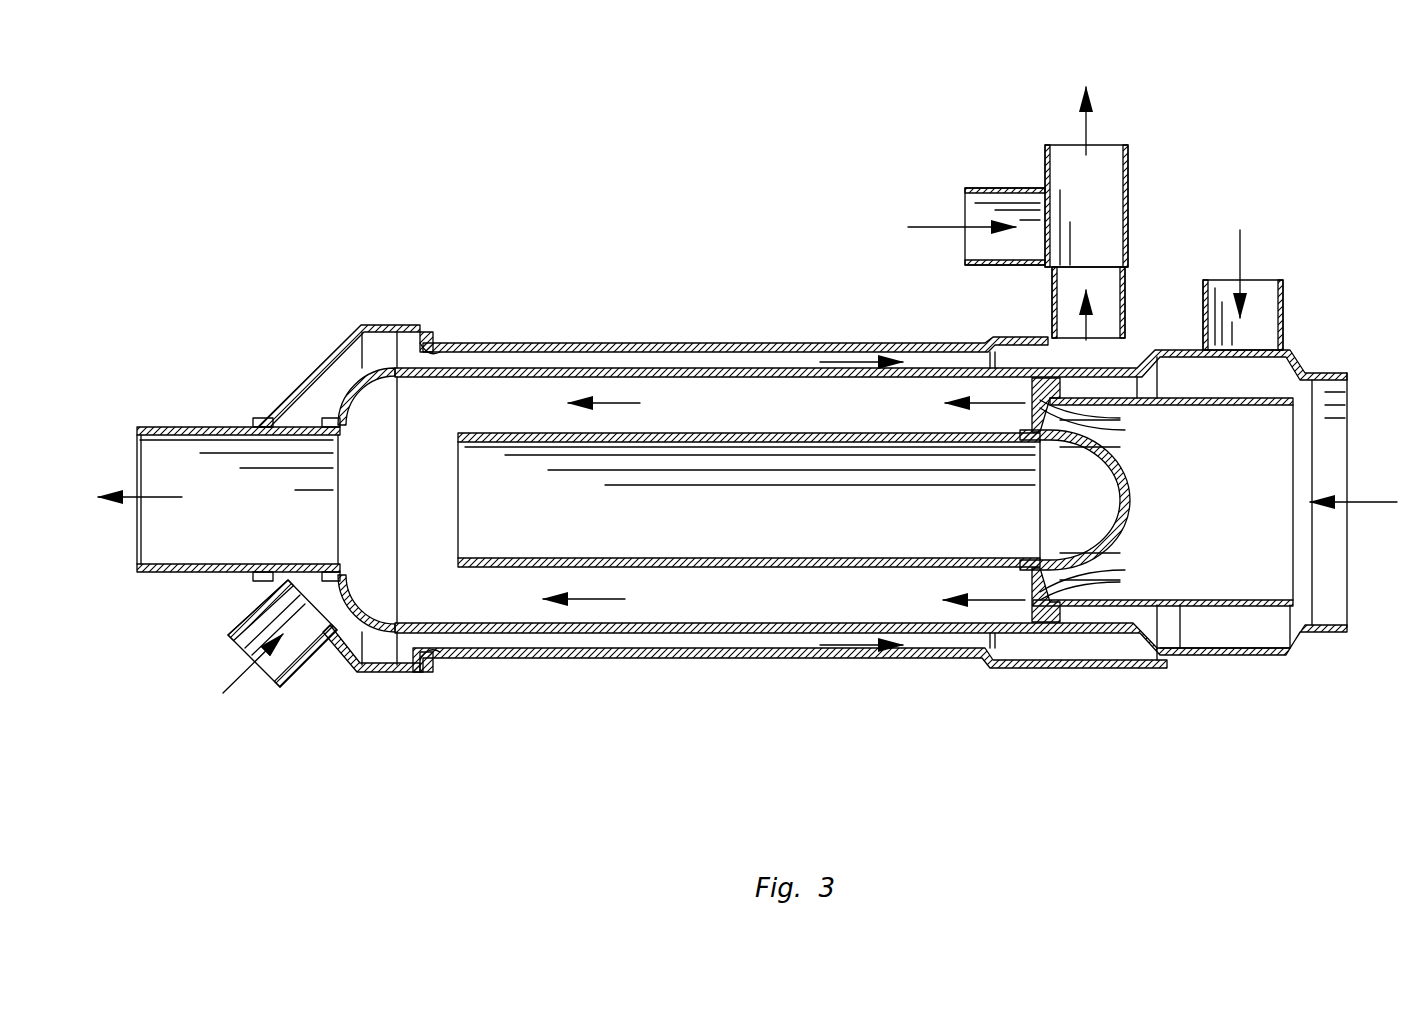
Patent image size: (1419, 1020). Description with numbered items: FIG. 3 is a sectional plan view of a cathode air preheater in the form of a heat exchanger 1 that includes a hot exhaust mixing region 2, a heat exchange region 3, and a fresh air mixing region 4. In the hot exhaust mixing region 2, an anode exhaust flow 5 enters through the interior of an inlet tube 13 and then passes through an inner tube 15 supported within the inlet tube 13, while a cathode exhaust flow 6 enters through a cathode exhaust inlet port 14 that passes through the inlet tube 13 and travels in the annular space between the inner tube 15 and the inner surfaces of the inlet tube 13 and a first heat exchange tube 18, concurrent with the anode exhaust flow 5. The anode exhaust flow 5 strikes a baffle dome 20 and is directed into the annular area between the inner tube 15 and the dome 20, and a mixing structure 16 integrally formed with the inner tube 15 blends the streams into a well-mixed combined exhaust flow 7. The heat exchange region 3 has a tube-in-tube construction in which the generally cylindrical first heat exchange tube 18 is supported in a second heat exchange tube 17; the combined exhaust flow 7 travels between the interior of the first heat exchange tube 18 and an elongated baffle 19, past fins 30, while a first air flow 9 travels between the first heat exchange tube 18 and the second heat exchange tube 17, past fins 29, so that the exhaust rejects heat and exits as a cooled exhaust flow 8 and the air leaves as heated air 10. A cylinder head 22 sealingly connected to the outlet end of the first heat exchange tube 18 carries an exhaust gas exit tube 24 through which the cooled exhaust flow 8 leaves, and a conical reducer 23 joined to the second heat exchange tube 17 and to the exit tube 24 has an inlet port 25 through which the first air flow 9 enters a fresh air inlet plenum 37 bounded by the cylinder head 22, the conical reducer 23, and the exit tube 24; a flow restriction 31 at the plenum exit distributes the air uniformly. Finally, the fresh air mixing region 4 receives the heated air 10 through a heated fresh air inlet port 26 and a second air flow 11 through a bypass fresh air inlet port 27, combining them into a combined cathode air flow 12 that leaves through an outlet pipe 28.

The heat exchanger 1 is at (278, 122).
The hot exhaust mixing region 2 is at (1022, 740).
The heat exchange region 3 is at (1005, 740).
The fresh air mixing region 4 is at (883, 147).
The anode exhaust flow 5 is at (1370, 502).
The cathode exhaust flow 6 is at (1245, 265).
The combined exhaust flow 7 is at (635, 403).
The cooled exhaust flow 8 is at (165, 497).
The first air flow 9 is at (852, 362).
The heated air 10 is at (1082, 340).
The second air flow 11 is at (940, 227).
The combined cathode air flow 12 is at (1084, 125).
The inlet tube 13 is at (1225, 655).
The cathode exhaust inlet port 14 is at (1285, 330).
The inner tube 15 is at (1217, 405).
The mixing structure 16 is at (1095, 597).
The second heat exchange tube 17 is at (555, 343).
The first heat exchange tube 18 is at (680, 625).
The elongated baffle 19 is at (715, 558).
The baffle dome 20 is at (1120, 505).
The cylinder head 22 is at (350, 380).
The conical reducer 23 is at (305, 384).
The exhaust gas exit tube 24 is at (200, 427).
The inlet port 25 is at (238, 622).
The heated fresh air inlet port 26 is at (1128, 325).
The bypass fresh air inlet port 27 is at (985, 188).
The outlet pipe 28 is at (1130, 195).
The fins 29 is at (505, 648).
The fins 30 is at (742, 400).
The flow restriction 31 is at (438, 340).
The fresh air inlet plenum 37 is at (310, 645).